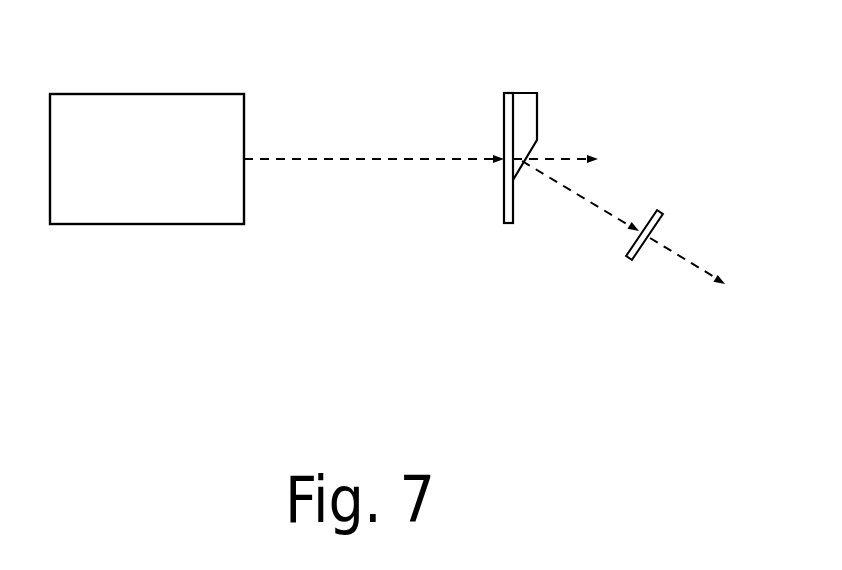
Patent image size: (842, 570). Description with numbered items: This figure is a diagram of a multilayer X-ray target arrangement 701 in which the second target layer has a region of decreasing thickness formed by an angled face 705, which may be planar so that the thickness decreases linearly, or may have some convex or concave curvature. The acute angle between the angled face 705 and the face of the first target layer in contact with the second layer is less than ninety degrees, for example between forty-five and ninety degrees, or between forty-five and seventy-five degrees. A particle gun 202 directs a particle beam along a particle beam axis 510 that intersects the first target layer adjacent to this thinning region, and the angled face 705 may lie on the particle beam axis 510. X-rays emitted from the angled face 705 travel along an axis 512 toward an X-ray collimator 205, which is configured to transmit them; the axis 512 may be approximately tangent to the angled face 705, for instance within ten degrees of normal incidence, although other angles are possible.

The particle gun 202 is at (103, 121).
The optical system 701 is at (194, 328).
The particle beam axis 510 is at (397, 160).
The angled face 705 is at (532, 153).
The axis of X-rays 512 is at (595, 203).
The X-ray collimator 205 is at (656, 231).